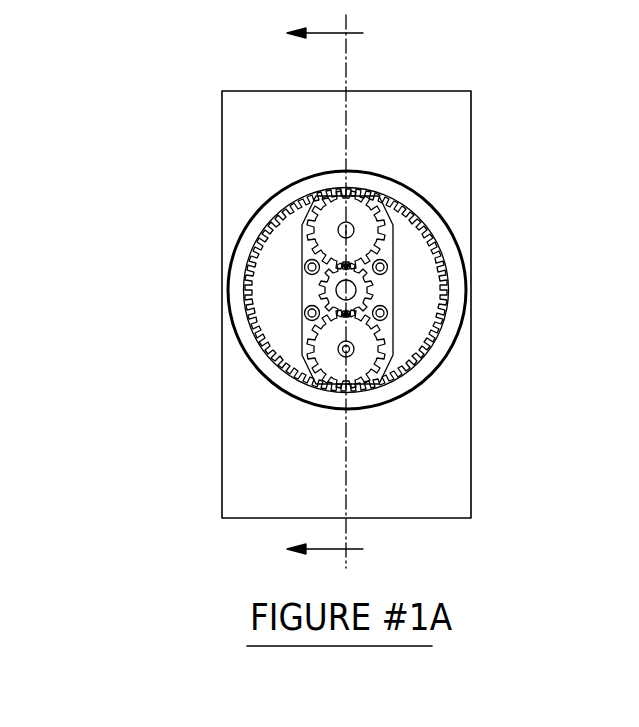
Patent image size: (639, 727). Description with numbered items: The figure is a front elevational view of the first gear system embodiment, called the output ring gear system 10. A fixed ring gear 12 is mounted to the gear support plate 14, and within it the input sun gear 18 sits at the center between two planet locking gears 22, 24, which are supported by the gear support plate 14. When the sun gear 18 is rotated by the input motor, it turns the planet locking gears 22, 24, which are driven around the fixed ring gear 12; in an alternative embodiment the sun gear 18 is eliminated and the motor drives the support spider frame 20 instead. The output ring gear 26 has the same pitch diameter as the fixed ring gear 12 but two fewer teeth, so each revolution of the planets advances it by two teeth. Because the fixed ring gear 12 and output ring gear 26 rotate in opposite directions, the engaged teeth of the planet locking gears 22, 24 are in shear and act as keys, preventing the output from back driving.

The output ring gear system 10 is at (176, 81).
The fixed ring gear 12 is at (252, 212).
The gear support plate 14 is at (383, 127).
The input sun gear 18 is at (363, 305).
The support spider frame 20 is at (383, 285).
The planet locking gear 22 is at (328, 349).
The planet locking gear 24 is at (363, 230).
The output ring gear 26 is at (247, 245).